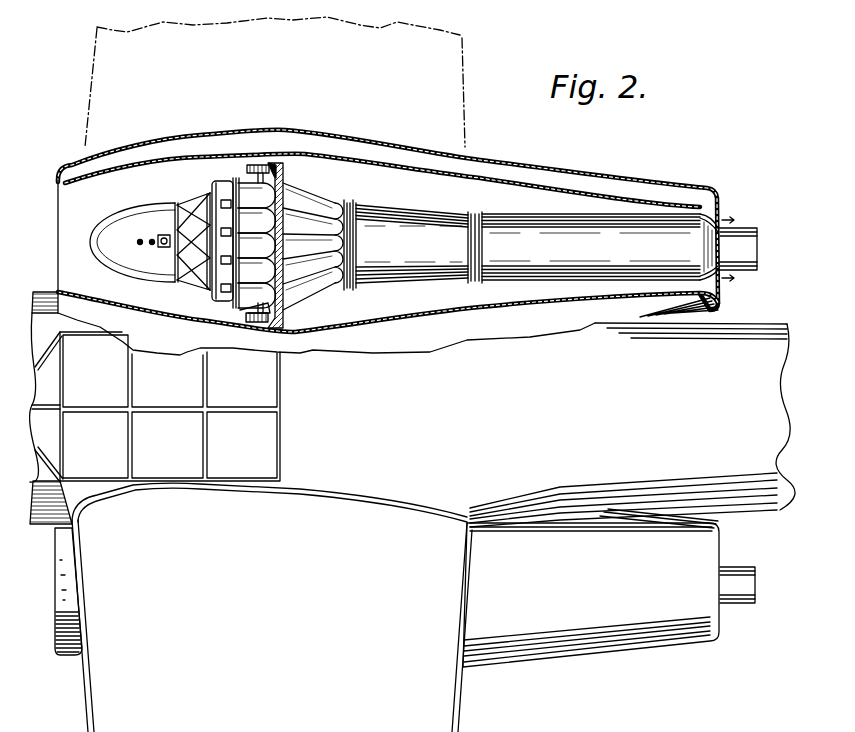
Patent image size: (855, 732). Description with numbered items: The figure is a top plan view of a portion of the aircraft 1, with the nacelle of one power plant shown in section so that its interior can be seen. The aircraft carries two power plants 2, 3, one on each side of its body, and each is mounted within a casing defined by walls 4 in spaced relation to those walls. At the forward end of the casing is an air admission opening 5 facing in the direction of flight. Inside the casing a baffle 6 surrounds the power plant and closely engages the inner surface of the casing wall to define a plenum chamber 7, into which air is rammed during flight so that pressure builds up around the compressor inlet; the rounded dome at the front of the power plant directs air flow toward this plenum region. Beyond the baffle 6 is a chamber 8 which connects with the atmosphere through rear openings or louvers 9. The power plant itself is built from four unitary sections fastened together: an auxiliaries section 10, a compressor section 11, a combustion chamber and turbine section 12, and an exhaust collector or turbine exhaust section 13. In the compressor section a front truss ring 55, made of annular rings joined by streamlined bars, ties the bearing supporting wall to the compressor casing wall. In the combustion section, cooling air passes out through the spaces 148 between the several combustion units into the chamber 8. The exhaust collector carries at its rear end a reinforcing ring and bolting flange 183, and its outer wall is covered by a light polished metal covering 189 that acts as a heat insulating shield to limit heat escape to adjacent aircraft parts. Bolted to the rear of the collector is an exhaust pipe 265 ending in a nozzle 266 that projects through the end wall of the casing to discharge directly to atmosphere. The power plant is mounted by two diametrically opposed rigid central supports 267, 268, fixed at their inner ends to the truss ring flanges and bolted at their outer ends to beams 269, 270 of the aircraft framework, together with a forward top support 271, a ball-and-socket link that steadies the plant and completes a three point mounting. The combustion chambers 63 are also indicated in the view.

The aircraft 1 is at (41, 291).
The power plant 2 is at (78, 154).
The power plant 3 is at (60, 657).
The casing walls 4 is at (182, 160).
The air admission opening 5 is at (62, 201).
The baffle 6 is at (283, 168).
The plenum chamber 7 is at (167, 176).
The chamber 8 is at (371, 182).
The rear openings or louvers 9 is at (712, 217).
The auxiliaries section 10 is at (134, 249).
The compressor section 11 is at (208, 240).
The combustion chamber and turbine section 12 is at (319, 245).
The exhaust collector or turbine exhaust section 13 is at (442, 255).
The front truss ring 55 is at (191, 193).
The combustion chambers 63 is at (242, 177).
The spaces between combustion units 148 is at (310, 217).
The reinforcing ring and bolting flange 183 is at (482, 242).
The polished metal covering 189 is at (412, 244).
The exhaust pipe 265 is at (600, 247).
The nozzle 266 is at (737, 249).
The rigid central support 267 is at (272, 160).
The rigid central support 268 is at (253, 313).
The beam 269 is at (257, 164).
The beam 270 is at (248, 323).
The forward top support 271 is at (163, 233).